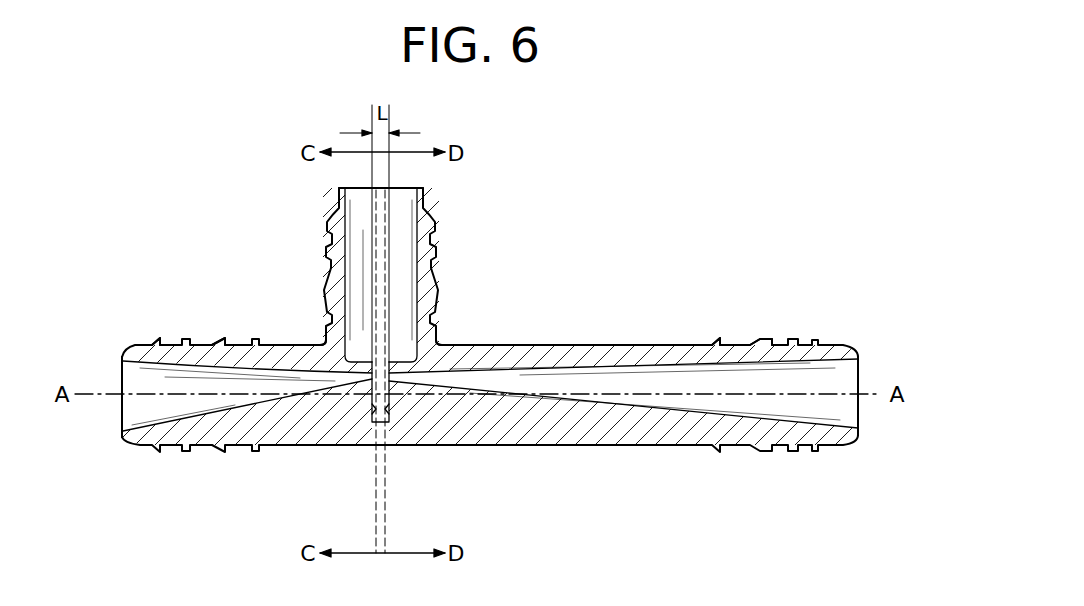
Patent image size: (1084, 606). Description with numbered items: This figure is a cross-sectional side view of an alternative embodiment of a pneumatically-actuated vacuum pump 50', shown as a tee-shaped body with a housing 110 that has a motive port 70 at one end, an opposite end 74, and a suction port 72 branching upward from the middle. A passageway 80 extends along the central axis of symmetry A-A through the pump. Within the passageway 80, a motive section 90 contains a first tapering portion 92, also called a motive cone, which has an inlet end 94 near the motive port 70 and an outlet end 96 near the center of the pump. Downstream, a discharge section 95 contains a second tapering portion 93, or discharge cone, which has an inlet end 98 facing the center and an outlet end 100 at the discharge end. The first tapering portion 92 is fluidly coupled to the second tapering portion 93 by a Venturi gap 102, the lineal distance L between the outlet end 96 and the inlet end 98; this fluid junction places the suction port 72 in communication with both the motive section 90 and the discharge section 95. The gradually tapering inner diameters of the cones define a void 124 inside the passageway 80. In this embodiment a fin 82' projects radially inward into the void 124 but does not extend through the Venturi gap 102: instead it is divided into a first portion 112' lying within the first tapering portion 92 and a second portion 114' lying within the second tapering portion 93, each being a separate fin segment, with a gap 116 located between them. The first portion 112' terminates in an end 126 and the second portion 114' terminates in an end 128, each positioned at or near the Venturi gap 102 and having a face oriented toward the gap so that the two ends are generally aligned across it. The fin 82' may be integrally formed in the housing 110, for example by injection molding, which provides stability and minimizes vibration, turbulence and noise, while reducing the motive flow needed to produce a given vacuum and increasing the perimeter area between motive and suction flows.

The pneumatically-actuated vacuum pump 50' is at (542, 325).
The motive port 70 is at (116, 436).
The suction port 72 is at (413, 187).
The third connector 74 is at (859, 418).
The passageway 80 is at (198, 377).
The fin 82' is at (623, 421).
The motive section 90 is at (158, 349).
The first tapering portion 92 is at (228, 378).
The second tapering portion 93 is at (770, 348).
The inlet end 94 is at (116, 358).
The discharge section 95 is at (728, 348).
The outlet end 96 is at (325, 344).
The inlet end 98 is at (436, 350).
The outlet end 100 is at (859, 361).
The Venturi gap 102 is at (381, 385).
The housing 110 is at (508, 356).
The first portion 112' is at (542, 338).
The second portion 114' is at (542, 342).
The gap 116 is at (378, 442).
The void 124 is at (163, 405).
The end 126 is at (375, 408).
The end 128 is at (393, 418).